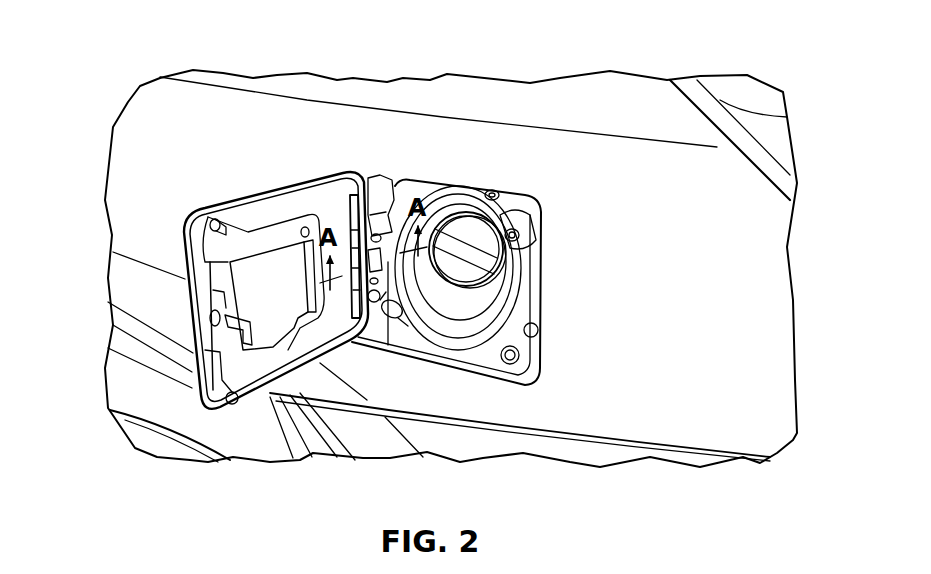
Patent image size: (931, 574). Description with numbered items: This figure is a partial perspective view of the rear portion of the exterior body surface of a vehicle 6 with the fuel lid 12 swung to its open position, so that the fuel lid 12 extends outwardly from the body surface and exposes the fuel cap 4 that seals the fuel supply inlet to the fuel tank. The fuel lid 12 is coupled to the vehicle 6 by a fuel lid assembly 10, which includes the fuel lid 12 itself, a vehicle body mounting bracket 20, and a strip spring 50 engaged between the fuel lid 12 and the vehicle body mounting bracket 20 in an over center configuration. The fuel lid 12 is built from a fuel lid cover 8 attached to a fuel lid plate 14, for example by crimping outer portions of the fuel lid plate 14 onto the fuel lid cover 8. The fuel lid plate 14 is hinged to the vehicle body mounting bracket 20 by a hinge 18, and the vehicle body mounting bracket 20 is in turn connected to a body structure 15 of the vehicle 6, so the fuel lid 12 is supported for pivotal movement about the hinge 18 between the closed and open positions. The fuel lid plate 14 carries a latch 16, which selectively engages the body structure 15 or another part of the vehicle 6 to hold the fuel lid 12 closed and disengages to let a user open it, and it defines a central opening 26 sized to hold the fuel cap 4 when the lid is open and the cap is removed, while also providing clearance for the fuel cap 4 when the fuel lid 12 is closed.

The fuel cap 4 is at (477, 233).
The vehicle 6 is at (233, 120).
The fuel lid cover 8 is at (203, 255).
The fuel lid assembly 10 is at (168, 244).
The fuel lid 12 is at (273, 207).
The fuel lid plate 14 is at (199, 222).
The body structure 15 is at (402, 190).
The latch 16 is at (192, 342).
The hinge 18 is at (348, 192).
The vehicle body mounting bracket 20 is at (376, 180).
The central opening 26 is at (273, 318).
The strip spring 50 is at (407, 300).